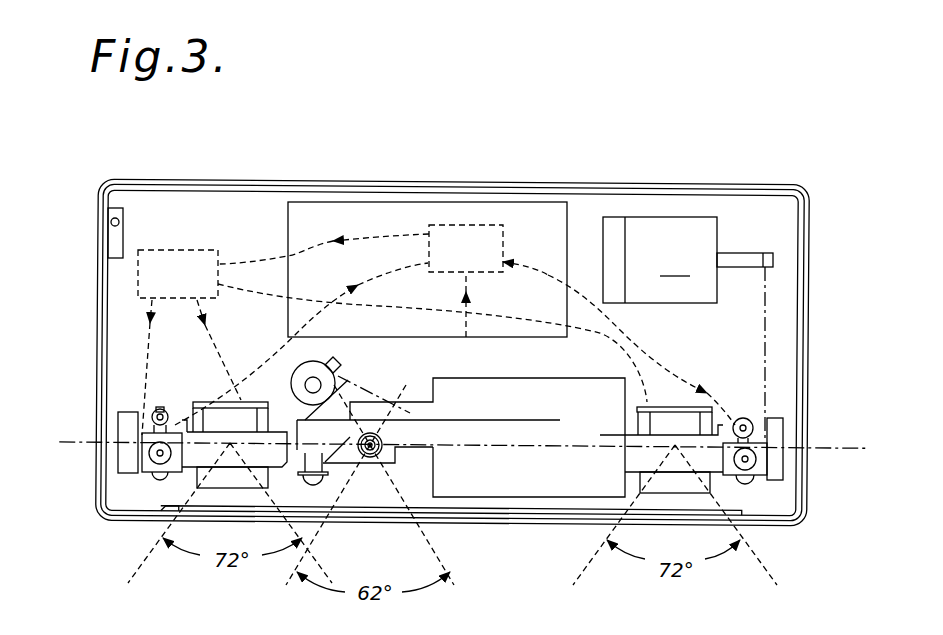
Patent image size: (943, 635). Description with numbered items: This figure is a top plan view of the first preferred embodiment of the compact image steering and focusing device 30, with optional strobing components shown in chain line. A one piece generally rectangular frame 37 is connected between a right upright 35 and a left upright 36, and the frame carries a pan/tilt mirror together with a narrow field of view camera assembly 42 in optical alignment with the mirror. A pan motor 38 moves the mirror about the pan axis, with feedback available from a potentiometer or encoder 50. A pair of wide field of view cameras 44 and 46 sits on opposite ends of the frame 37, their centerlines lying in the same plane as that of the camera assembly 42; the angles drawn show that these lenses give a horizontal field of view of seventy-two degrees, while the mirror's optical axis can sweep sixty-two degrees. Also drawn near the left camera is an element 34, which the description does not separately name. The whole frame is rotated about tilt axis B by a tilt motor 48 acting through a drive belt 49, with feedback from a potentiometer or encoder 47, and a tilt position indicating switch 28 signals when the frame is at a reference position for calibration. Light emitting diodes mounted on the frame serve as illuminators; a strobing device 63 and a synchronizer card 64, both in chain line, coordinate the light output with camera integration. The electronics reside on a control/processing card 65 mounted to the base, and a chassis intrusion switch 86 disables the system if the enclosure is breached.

The compact image steering and focusing device 30 is at (522, 162).
The chassis intrusion detector or switch 86 is at (107, 218).
The strobing device 63 is at (184, 252).
The control/processing card 65 is at (330, 202).
The synchronizer card 64 is at (441, 226).
The potentiometer 47 is at (613, 235).
The tilt motor 48 is at (675, 264).
The drive belt 49 is at (766, 307).
The tilt position indicating switch 28 is at (162, 408).
The left upright 36 is at (128, 414).
The frame 37 is at (129, 486).
The left coil 34 is at (177, 412).
The WFOV camera 44 is at (235, 402).
The pan motor 38 is at (302, 365).
The potentiometer 50 is at (346, 380).
The NFOV camera assembly 42 is at (540, 497).
The WFOV camera 46 is at (668, 406).
The right upright 35 is at (783, 418).
The tilt axis B is at (820, 444).